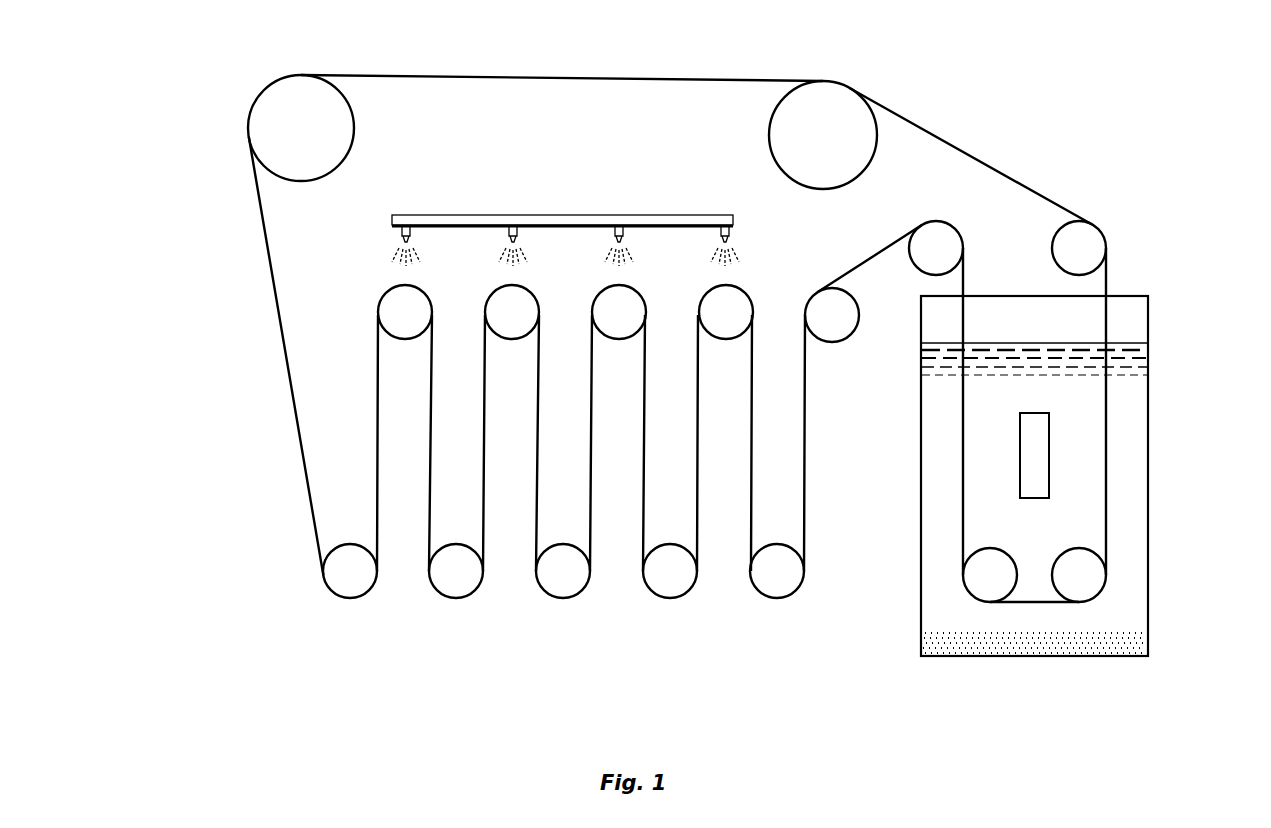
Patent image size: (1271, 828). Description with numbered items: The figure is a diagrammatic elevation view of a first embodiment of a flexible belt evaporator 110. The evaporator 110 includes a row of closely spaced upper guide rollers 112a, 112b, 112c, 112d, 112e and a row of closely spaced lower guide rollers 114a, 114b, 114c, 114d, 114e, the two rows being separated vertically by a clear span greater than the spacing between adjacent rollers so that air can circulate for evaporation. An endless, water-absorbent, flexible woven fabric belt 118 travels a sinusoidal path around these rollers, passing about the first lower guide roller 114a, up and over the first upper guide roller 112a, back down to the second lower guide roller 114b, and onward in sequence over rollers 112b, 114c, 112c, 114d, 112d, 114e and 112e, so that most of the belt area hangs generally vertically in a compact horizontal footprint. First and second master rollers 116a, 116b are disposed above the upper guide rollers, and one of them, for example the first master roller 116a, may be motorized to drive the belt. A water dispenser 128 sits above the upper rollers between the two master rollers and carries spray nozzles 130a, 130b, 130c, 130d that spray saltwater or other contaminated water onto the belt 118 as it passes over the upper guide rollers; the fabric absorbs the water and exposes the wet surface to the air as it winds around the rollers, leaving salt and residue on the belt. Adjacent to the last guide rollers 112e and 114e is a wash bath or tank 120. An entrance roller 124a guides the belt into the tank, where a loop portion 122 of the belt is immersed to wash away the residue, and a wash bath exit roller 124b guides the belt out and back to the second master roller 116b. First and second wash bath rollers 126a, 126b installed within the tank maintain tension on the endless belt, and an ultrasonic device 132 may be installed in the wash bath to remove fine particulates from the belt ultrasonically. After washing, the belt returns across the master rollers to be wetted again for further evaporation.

The flexible belt evaporator 110 is at (272, 655).
The upper guide roller 112a is at (378, 296).
The upper guide roller 112b is at (487, 298).
The upper guide roller 112c is at (594, 298).
The upper guide roller 112d is at (701, 298).
The upper guide roller 112e is at (858, 325).
The lower guide roller 114a is at (328, 588).
The lower guide roller 114b is at (452, 600).
The lower guide roller 114c is at (558, 600).
The lower guide roller 114d is at (666, 600).
The lower guide roller 114e is at (770, 600).
The first master roller 116a is at (340, 142).
The second master roller 116b is at (858, 148).
The flexible woven fabric belt 118 is at (455, 78).
The wash bath or tank 120 is at (1056, 660).
The loop portion 122 is at (1104, 490).
The entrance roller 124a is at (940, 222).
The wash bath exit roller 124b is at (1094, 224).
The first wash bath roller 126a is at (963, 586).
The second wash bath roller 126b is at (1106, 586).
The water dispenser 128 is at (392, 212).
The spray nozzle 130a is at (410, 232).
The spray nozzle 130b is at (518, 232).
The spray nozzle 130c is at (624, 232).
The spray nozzle 130d is at (730, 236).
The ultrasonic device 132 is at (1134, 432).